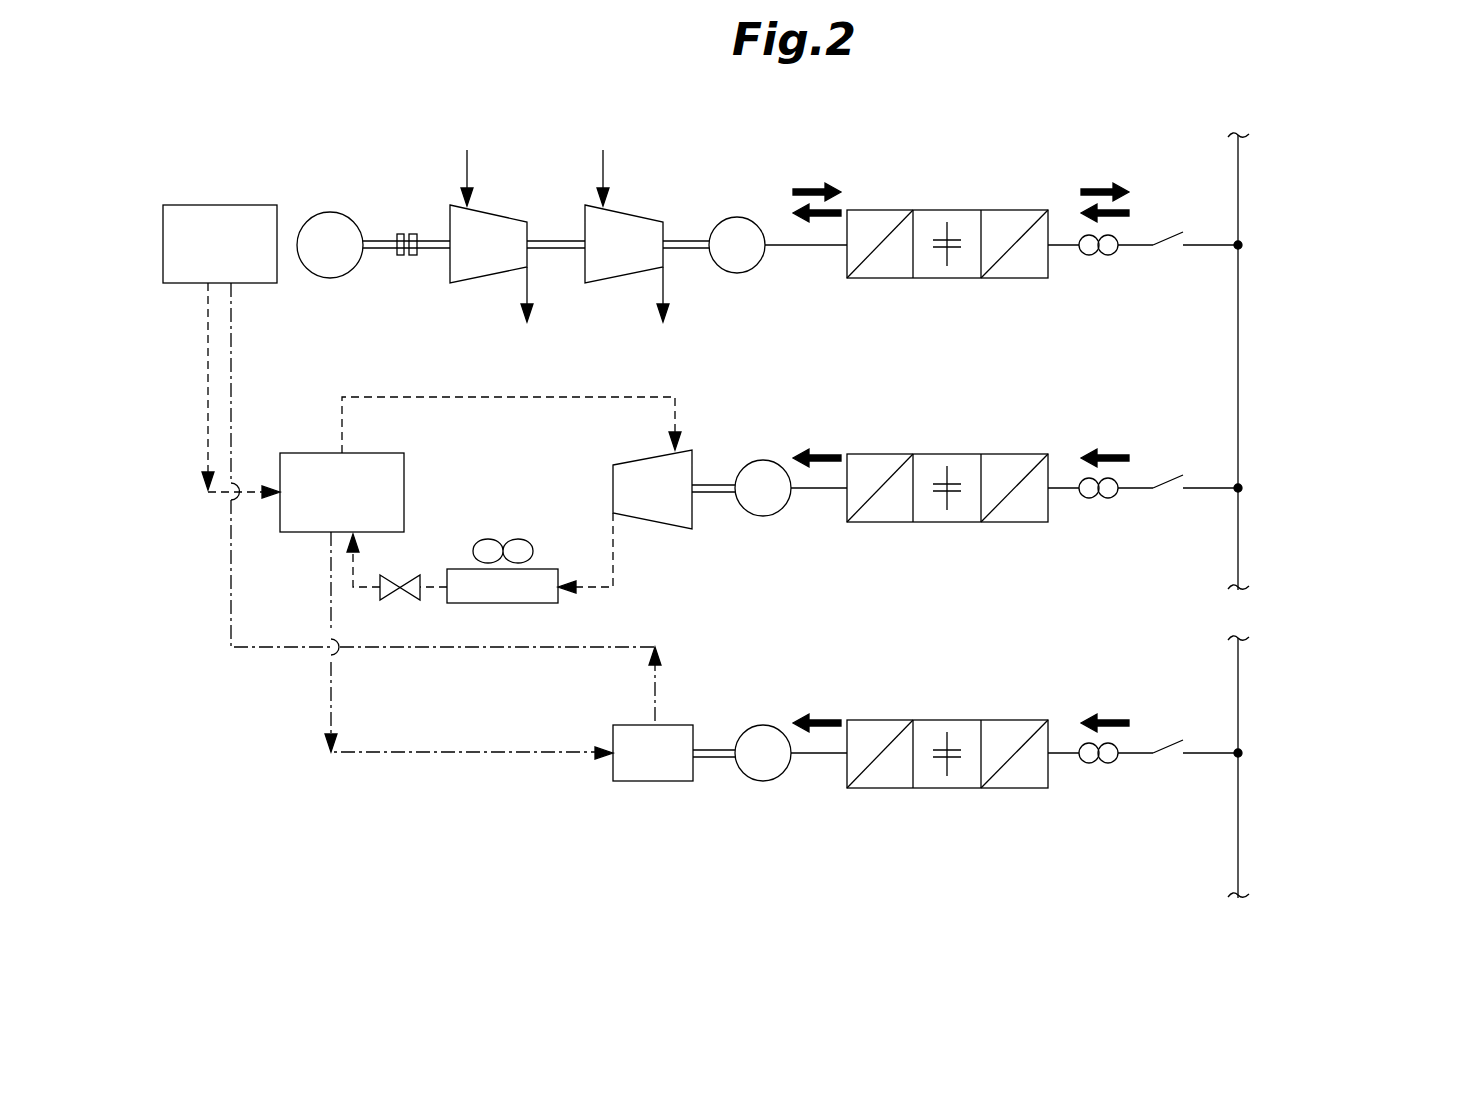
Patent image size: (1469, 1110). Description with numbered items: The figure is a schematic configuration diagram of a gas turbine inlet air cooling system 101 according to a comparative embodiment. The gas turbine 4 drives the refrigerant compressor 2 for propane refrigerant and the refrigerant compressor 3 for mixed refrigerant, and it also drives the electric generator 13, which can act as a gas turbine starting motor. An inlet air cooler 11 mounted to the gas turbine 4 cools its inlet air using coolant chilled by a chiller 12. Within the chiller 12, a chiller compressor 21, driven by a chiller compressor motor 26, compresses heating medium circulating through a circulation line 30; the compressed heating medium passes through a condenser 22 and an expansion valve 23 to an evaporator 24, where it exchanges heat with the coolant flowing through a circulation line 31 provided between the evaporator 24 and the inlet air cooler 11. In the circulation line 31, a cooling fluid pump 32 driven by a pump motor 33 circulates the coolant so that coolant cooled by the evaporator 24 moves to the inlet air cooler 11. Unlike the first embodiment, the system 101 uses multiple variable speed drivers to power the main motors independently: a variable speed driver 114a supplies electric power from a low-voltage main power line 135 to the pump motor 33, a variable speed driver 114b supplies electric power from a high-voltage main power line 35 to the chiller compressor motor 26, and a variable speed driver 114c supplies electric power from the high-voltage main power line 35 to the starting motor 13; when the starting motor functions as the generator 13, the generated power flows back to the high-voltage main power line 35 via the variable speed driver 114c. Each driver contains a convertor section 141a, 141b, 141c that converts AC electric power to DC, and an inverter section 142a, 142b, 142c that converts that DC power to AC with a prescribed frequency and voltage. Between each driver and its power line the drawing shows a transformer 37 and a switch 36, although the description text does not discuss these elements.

The gas turbine inlet air cooling system 101 is at (1083, 97).
The inlet air cooler 11 is at (228, 202).
The gas turbine 4 is at (340, 214).
The refrigerant compressor 2 is at (490, 214).
The refrigerant compressor 3 is at (645, 214).
The electric generator 13 is at (745, 217).
The variable speed driver 114c is at (974, 249).
The inverter section 142c is at (878, 280).
The convertor section 141c is at (1018, 280).
The switch 36 is at (1170, 233).
The transformer 37 is at (1095, 256).
The high-voltage main power line 35 is at (1240, 272).
The chiller 12 is at (700, 383).
The circulation line 30 is at (492, 398).
The evaporator 24 is at (404, 488).
The expansion valve 23 is at (408, 577).
The condenser 22 is at (530, 604).
The chiller compressor 21 is at (665, 530).
The chiller compressor motor 26 is at (770, 460).
The variable speed driver 114b is at (975, 494).
The inverter section 142b is at (878, 524).
The convertor section 141b is at (1018, 524).
The circulation line 31 is at (231, 630).
The cooling fluid pump 32 is at (672, 782).
The pump motor 33 is at (770, 727).
The variable speed driver 114a is at (975, 762).
The inverter section 142a is at (878, 790).
The convertor section 141a is at (1018, 790).
The low-voltage main power line 135 is at (1240, 870).